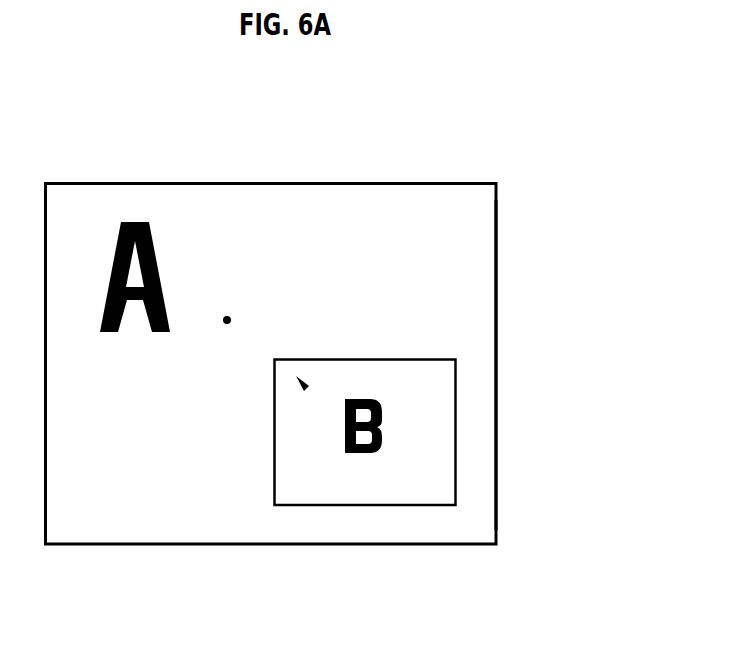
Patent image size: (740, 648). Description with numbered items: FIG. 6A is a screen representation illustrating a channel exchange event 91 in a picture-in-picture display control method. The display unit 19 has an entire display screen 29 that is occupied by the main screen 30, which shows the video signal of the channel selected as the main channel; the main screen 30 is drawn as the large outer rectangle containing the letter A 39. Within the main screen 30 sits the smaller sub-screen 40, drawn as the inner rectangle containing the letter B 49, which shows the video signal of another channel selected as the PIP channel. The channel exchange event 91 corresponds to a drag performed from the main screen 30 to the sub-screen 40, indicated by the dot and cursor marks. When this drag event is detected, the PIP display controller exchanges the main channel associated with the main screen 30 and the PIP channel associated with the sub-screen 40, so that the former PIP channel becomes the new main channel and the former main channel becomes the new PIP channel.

The display unit 19 is at (346, 176).
The display screen 29 is at (595, 297).
The main screen 30 is at (496, 298).
The main image (letter A) 39 is at (181, 226).
The sub-screen 40 is at (457, 453).
The sub image (letter B) 49 is at (365, 488).
The channel exchange event 91 is at (250, 340).